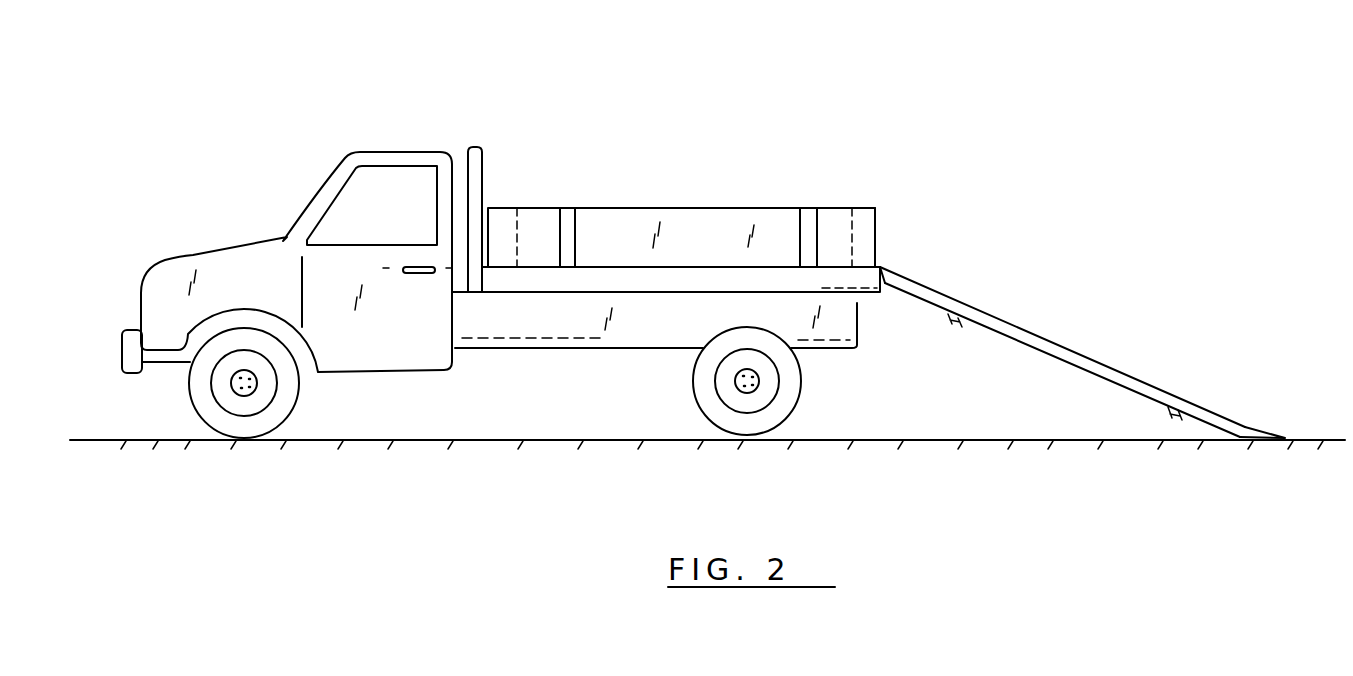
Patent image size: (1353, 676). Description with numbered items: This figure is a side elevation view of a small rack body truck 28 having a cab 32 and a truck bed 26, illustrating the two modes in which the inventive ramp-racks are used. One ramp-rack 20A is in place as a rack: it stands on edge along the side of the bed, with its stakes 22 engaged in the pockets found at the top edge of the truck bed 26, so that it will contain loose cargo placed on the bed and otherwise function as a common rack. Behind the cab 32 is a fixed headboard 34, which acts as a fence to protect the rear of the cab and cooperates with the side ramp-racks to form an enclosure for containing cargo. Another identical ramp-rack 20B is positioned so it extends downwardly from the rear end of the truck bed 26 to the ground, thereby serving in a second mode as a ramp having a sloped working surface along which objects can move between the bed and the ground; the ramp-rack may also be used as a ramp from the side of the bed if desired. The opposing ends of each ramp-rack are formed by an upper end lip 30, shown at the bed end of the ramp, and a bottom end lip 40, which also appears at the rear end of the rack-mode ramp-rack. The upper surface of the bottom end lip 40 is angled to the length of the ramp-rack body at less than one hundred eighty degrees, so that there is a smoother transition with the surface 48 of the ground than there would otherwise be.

The rack body truck 28 is at (430, 106).
The cab 32 is at (360, 148).
The fixed headboard 34 is at (481, 145).
The truck bed 26 is at (552, 280).
The ramp-rack 20A is at (690, 208).
The bottom end lip 40 is at (866, 207).
The upper end lip 30 is at (878, 262).
The ramp-rack 20B is at (1032, 332).
The stakes 22 is at (952, 318).
The surface of the ground 48 is at (892, 440).